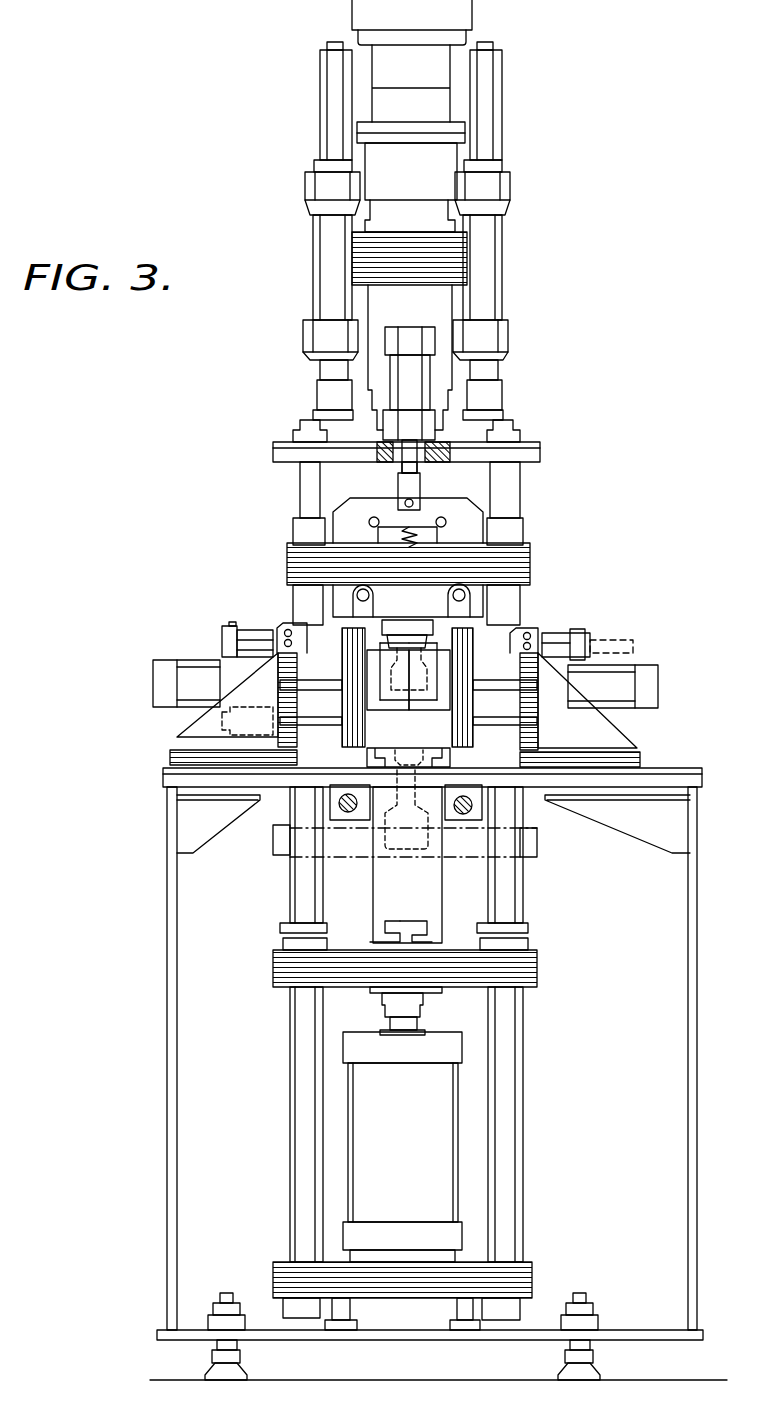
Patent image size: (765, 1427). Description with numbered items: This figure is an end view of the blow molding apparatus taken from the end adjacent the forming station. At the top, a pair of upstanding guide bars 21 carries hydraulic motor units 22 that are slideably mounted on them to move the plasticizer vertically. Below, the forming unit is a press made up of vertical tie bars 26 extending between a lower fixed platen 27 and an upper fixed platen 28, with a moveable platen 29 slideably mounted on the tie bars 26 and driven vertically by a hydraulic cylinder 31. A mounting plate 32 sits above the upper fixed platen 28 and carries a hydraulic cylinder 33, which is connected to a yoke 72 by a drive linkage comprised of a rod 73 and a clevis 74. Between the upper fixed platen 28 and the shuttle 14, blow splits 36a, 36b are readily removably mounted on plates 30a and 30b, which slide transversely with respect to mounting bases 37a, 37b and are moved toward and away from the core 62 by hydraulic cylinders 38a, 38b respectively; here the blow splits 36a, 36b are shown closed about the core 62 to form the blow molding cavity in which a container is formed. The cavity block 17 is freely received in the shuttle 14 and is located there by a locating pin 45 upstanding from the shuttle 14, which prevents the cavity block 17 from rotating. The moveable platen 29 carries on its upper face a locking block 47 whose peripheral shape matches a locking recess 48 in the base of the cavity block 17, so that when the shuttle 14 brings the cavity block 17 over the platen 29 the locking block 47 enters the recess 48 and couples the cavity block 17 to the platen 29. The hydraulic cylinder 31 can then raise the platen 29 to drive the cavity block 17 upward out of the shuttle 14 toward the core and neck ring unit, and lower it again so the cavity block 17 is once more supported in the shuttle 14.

The guide bars 21 is at (338, 42).
The hydraulic motor units 22 is at (315, 266).
The hydraulic cylinder 33 is at (388, 372).
The mounting plate 32 is at (273, 452).
The rod 73 is at (418, 462).
The clevis 74 is at (398, 492).
The yoke 72 is at (475, 511).
The upper fixed platen 28 is at (287, 560).
The plate 30a is at (345, 632).
The plate 30b is at (472, 632).
The core 62 is at (405, 668).
The hydraulic cylinder 38a is at (153, 668).
The hydraulic cylinder 38b is at (660, 684).
The mounting base 37a is at (172, 745).
The mounting base 37b is at (625, 745).
The locating pin 45 is at (367, 756).
The shuttle 14 is at (464, 768).
The blow split 36a is at (385, 713).
The blow split 36b is at (430, 713).
The moveable platen 29 is at (275, 840).
The cavity block 17 is at (373, 896).
The locking recess 48 is at (395, 918).
The locking block 47 is at (408, 942).
The tie bars 26 is at (290, 1117).
The hydraulic cylinder 31 is at (412, 1164).
The lower fixed platen 27 is at (535, 1270).